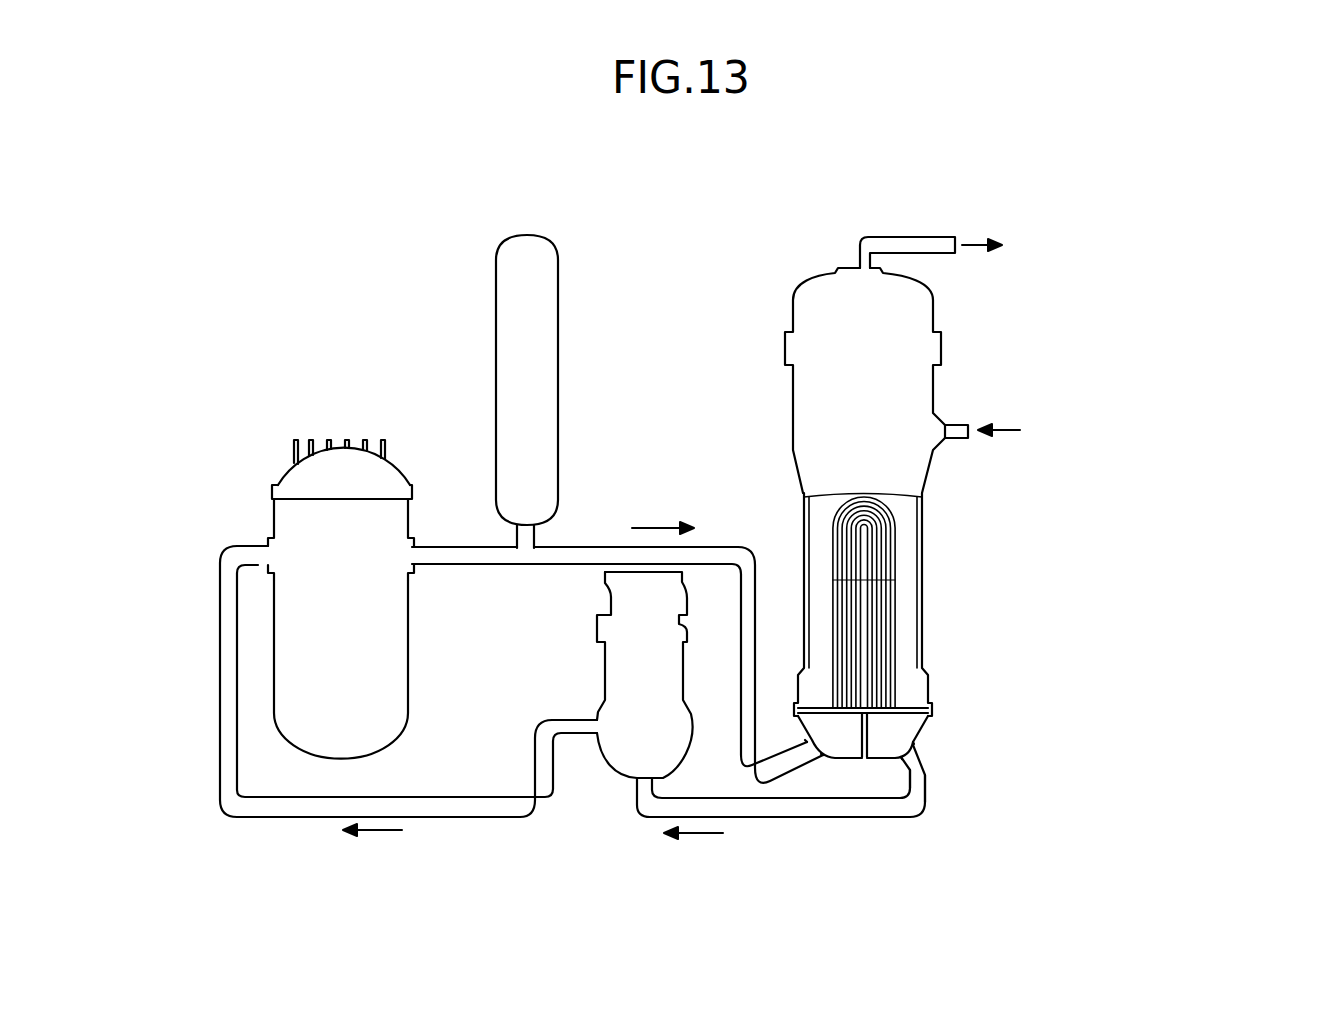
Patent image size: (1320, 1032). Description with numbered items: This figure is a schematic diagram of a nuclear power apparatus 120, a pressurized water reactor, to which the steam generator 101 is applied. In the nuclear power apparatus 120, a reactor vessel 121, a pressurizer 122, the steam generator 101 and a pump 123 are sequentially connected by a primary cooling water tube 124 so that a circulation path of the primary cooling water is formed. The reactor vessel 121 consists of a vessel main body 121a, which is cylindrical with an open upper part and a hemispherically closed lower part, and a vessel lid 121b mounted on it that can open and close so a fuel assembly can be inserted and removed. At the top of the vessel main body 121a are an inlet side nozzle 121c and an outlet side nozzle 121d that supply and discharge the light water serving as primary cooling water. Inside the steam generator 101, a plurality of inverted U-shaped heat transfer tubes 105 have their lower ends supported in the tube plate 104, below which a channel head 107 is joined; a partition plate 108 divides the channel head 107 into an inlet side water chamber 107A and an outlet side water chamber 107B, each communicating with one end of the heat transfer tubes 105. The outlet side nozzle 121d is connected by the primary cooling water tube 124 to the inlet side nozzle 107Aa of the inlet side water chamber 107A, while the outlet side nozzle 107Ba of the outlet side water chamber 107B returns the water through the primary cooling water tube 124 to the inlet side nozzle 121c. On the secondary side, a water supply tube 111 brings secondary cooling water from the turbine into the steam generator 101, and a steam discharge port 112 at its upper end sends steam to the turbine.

The nuclear power apparatus 120 is at (214, 266).
The reactor vessel 121 is at (275, 472).
The vessel main body 121a is at (377, 660).
The vessel lid 121b is at (388, 487).
The inlet side nozzle 121c is at (262, 545).
The outlet side nozzle 121d is at (413, 572).
The pressurizer 122 is at (496, 288).
The pump 123 is at (597, 630).
The primary cooling water tube 124 is at (218, 745).
The steam generator 101 is at (820, 272).
The tube plate 104 is at (902, 705).
The heat transfer tubes 105 is at (897, 600).
The channel head 107 is at (885, 770).
The inlet side water chamber 107A is at (838, 748).
The inlet side nozzle 107Aa is at (805, 740).
The outlet side water chamber 107B is at (898, 722).
The outlet side nozzle 107Ba is at (917, 742).
The partition plate 108 is at (912, 790).
The water supply tube 111 is at (953, 427).
The steam discharge port 112 is at (858, 263).